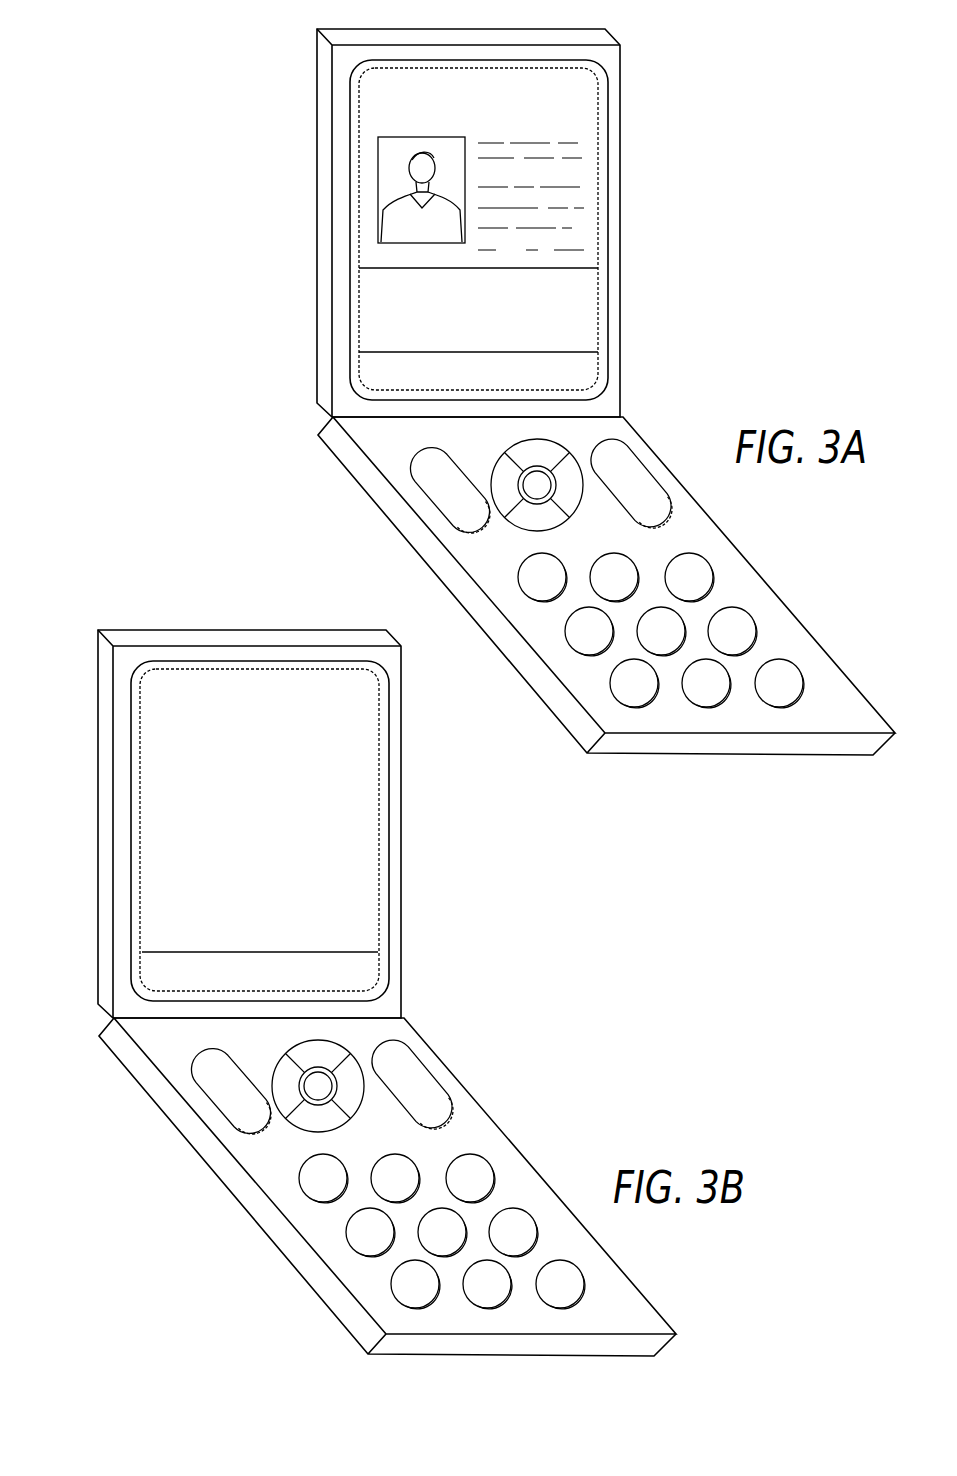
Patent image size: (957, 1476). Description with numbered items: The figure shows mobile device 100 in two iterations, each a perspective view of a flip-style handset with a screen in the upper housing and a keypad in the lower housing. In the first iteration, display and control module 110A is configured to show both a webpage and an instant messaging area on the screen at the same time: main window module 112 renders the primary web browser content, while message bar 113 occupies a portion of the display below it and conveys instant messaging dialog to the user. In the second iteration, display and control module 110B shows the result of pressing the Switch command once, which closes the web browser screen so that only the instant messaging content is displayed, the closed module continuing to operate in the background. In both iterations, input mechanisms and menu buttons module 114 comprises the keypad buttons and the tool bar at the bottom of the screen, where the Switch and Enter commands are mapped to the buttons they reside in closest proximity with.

In FIG. 3A, the mobile device 100 is at (477, 607).
In FIG. 3B, the mobile device 100 is at (257, 1205).
In FIG. 3A, the display and control module 110A is at (367, 178).
In FIG. 3B, the display and control module 110B is at (317, 870).
In FIG. 3A, the main window module 112 is at (553, 113).
In FIG. 3B, the main window module 112 is at (205, 815).
In FIG. 3A, the message bar 113 is at (573, 302).
In FIG. 3A, the input mechanisms and menu buttons module 114 is at (370, 368).
In FIG. 3B, the input mechanisms and menu buttons module 114 is at (317, 1083).